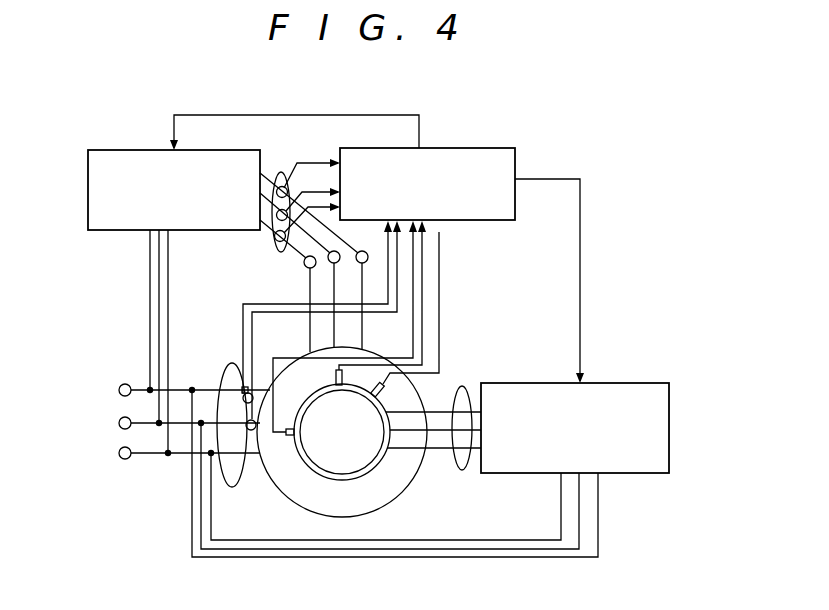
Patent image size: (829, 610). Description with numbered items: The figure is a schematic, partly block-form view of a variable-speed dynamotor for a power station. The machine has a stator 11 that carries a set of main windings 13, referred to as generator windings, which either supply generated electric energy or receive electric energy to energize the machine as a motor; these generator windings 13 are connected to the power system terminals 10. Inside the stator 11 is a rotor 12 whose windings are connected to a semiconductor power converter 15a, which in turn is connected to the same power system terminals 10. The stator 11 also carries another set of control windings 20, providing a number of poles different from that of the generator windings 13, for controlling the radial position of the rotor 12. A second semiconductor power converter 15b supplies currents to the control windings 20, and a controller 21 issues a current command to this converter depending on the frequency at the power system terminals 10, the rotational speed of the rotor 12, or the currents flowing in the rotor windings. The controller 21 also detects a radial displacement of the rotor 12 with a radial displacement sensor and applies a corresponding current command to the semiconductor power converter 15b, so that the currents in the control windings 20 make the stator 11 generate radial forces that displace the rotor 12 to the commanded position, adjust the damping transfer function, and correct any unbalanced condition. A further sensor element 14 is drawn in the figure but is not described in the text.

The power system terminals 10 is at (98, 428).
The stator 11 is at (310, 515).
The rotor 12 is at (368, 477).
The main windings 13 is at (207, 388).
The current detector 14 is at (440, 450).
The semiconductor power converter 15a is at (655, 475).
The semiconductor power converter 15b is at (98, 232).
The control windings 20 is at (312, 284).
The controller 21 is at (478, 146).